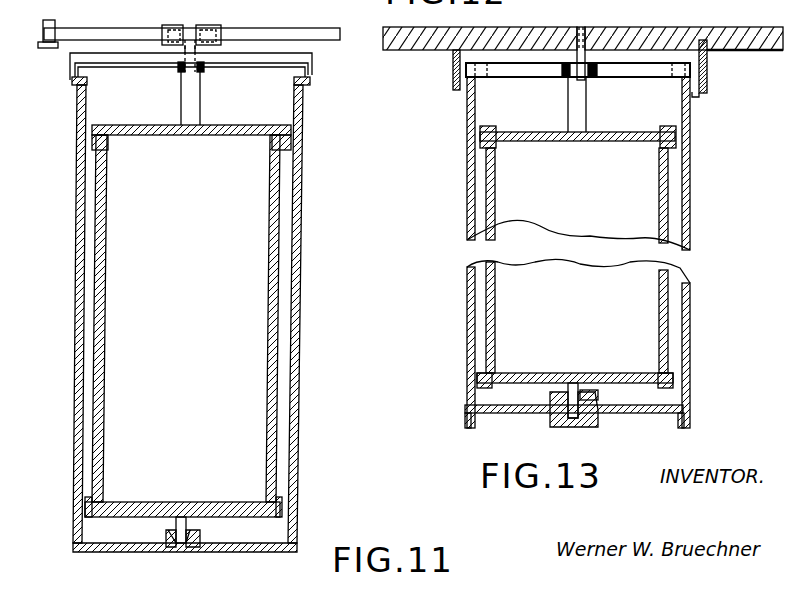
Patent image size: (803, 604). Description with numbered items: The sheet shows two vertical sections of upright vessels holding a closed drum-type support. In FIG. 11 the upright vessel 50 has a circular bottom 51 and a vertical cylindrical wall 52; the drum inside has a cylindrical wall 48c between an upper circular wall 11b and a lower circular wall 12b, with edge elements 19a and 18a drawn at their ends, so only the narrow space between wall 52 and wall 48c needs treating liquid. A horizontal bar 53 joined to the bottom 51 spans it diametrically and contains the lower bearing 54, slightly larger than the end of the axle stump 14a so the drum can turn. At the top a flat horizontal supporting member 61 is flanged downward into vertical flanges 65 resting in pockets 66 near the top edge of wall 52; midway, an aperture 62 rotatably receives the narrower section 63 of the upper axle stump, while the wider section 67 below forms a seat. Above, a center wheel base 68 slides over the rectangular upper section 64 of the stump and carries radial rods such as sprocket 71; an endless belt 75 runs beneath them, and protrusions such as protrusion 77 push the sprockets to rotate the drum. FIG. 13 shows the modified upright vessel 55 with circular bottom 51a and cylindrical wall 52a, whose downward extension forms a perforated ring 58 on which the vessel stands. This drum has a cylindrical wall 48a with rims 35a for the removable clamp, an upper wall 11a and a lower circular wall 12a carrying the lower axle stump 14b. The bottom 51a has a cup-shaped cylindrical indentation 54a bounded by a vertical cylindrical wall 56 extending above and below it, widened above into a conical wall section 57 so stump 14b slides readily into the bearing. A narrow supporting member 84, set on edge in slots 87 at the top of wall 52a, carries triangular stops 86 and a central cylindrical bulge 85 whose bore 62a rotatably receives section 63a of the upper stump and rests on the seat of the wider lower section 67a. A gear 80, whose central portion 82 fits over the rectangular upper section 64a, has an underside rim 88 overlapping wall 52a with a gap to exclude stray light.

In FIG. 11, the rod or sprocket 71 is at (293, 32).
In FIG. 11, the protrusion 77 is at (55, 28).
In FIG. 11, the endless belt 75 is at (40, 48).
In FIG. 11, the center wheel base 68 is at (170, 26).
In FIG. 11, the rectangular upper section of the upper axle stump 64 is at (200, 28).
In FIG. 11, the flat horizontal supporting member 61 is at (132, 68).
In FIG. 11, the vertical flanges 65 is at (315, 65).
In FIG. 11, the pockets 66 is at (312, 78).
In FIG. 11, the section of the upper axle stump 63 is at (180, 63).
In FIG. 11, the aperture 62 is at (205, 63).
In FIG. 11, the suspension rod 67 is at (192, 105).
In FIG. 11, the upper plate 19a is at (300, 128).
In FIG. 11, the upper circular wall of the support 11b is at (227, 150).
In FIG. 11, the cylindrical wall of the drum-type support 48c is at (278, 263).
In FIG. 11, the vertical cylindrical wall 52 is at (298, 338).
In FIG. 11, the upright vessel 50 is at (74, 266).
In FIG. 11, the circular bottom 51 is at (265, 548).
In FIG. 11, the lower circular wall of the support 12b is at (211, 511).
In FIG. 11, the plate end block 18a is at (283, 512).
In FIG. 11, the axle stump 14a is at (175, 548).
In FIG. 11, the horizontal bar 53 is at (198, 536).
In FIG. 11, the lower bearing 54 is at (190, 548).
In FIG. 13, the gear 80 is at (763, 58).
In FIG. 13, the support plate portion 82 is at (416, 40).
In FIG. 13, the upper rectangular section of the upper axle stump 64a is at (580, 30).
In FIG. 13, the rim 88 is at (455, 70).
In FIG. 13, the slots 87 is at (698, 96).
In FIG. 13, the narrow horizontal supporting member 84 is at (506, 72).
In FIG. 13, the section of the upper axle stump 63a is at (566, 62).
In FIG. 13, the bore 62a is at (594, 62).
In FIG. 13, the cylindrical bulge 85 is at (568, 80).
In FIG. 13, the lower, wider section of the axle stump 67a is at (583, 110).
In FIG. 13, the triangular stops 86 is at (681, 76).
In FIG. 13, the rims 35a is at (687, 132).
In FIG. 13, the inner chamber 11a is at (619, 141).
In FIG. 13, the cylindrical wall of the drum 48a is at (668, 200).
In FIG. 13, the cylindrical wall 52a is at (467, 163).
In FIG. 13, the upright vessel 55 is at (456, 212).
In FIG. 13, the lower circular wall of the closed cylindrical support 12a is at (628, 373).
In FIG. 13, the lower axle stump 14b is at (572, 376).
In FIG. 13, the circular bottom 51a is at (656, 413).
In FIG. 13, the extension of the wall 58 is at (465, 420).
In FIG. 13, the cup-shaped cylindrical indentation 54a is at (550, 412).
In FIG. 13, the vertical cylindrical wall 56 is at (598, 418).
In FIG. 13, the conical wall section 57 is at (598, 395).